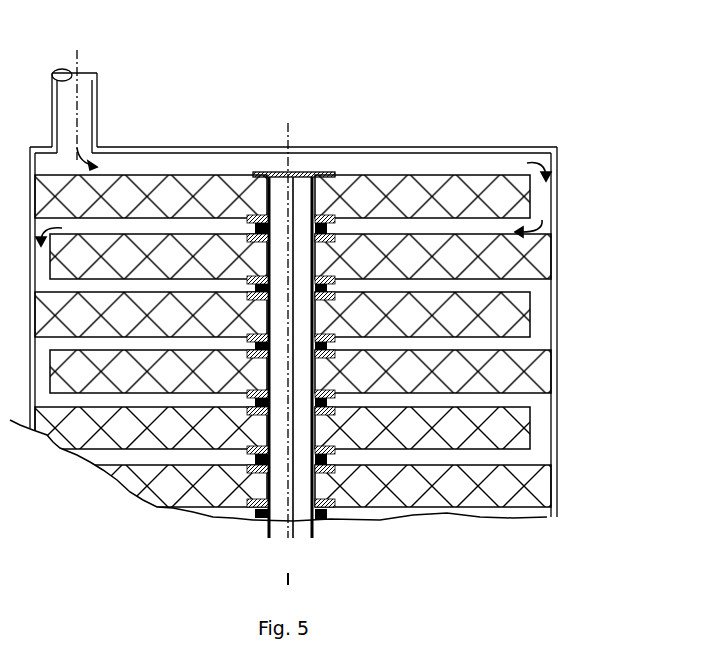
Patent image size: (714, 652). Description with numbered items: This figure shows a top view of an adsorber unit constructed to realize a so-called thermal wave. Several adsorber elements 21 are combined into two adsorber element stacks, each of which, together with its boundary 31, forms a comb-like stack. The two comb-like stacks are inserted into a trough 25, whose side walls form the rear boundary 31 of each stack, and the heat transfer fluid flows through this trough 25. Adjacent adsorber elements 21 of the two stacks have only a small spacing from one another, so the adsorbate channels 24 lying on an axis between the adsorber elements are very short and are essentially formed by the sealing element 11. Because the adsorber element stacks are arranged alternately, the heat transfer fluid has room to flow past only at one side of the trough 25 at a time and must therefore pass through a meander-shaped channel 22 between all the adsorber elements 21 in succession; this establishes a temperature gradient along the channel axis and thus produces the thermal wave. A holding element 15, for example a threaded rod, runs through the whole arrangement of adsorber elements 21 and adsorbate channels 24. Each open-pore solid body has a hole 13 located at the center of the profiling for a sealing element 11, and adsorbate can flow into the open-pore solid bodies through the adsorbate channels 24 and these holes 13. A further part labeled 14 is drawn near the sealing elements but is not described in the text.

The sealing element 11 is at (323, 520).
The hole 13 is at (278, 480).
The seal ring 14 is at (320, 462).
The holding element 15 is at (293, 173).
The adsorber element 21 is at (533, 367).
The meander-shaped channel 22 is at (543, 195).
The adsorbate channel 24 is at (305, 455).
The trough 25 is at (222, 148).
The boundary 31 is at (557, 317).